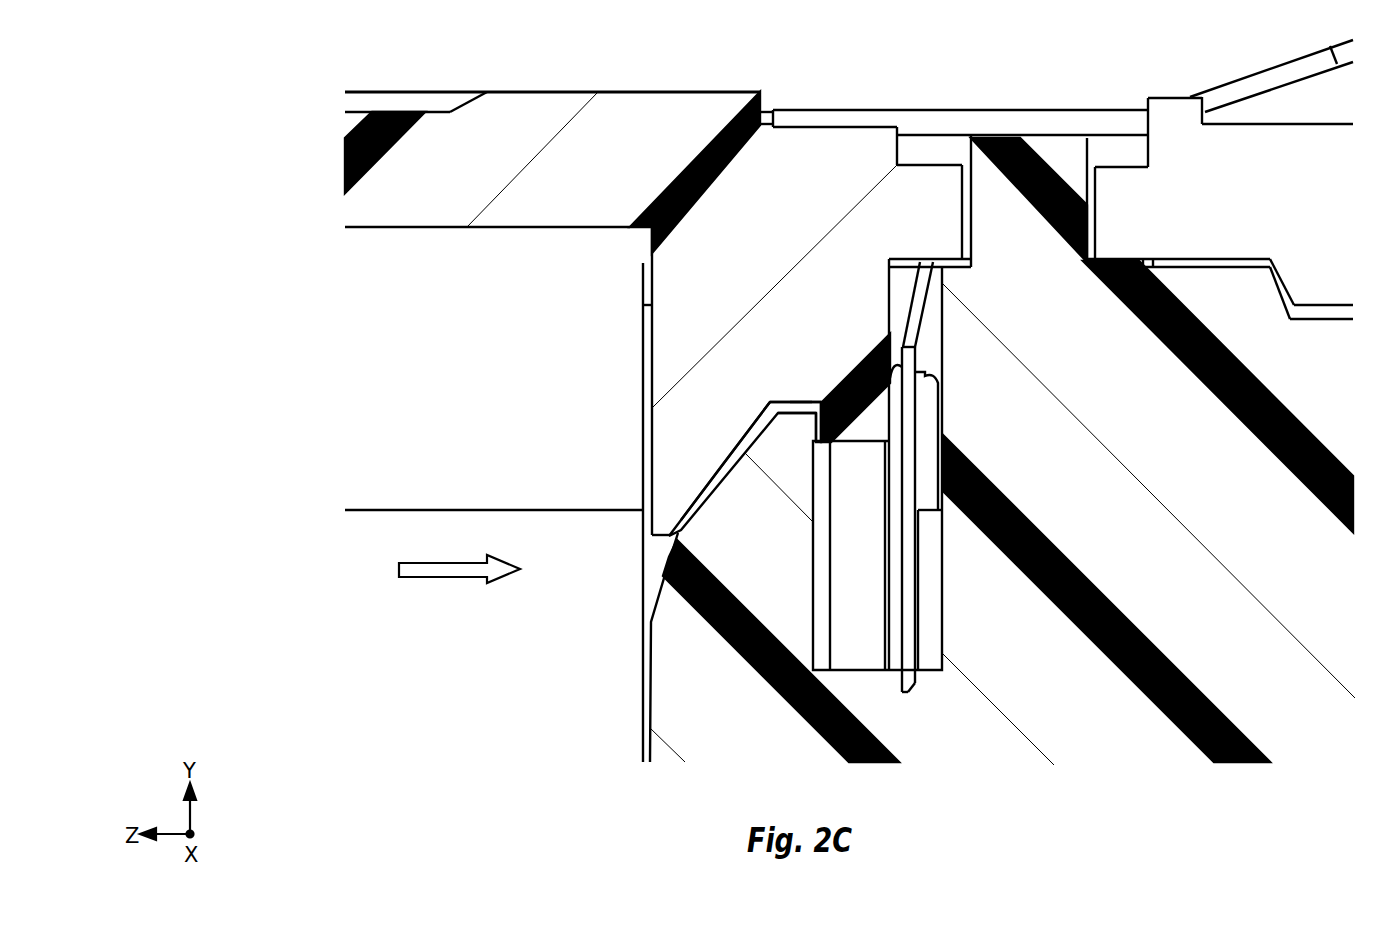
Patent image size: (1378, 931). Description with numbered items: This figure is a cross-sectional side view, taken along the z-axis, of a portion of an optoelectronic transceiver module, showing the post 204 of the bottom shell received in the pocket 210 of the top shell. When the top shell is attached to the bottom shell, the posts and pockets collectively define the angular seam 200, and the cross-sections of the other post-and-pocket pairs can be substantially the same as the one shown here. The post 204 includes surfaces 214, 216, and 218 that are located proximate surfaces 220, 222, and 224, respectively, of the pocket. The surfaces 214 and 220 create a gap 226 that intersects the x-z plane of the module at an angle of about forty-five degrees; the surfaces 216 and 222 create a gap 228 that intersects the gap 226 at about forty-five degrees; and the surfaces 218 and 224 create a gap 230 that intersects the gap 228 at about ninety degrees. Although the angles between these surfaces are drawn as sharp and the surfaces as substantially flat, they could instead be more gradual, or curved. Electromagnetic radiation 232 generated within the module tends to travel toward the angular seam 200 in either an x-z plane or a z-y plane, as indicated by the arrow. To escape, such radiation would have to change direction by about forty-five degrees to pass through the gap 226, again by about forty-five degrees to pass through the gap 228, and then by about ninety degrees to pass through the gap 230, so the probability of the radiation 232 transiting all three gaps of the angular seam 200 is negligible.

The angular seam 200 is at (860, 530).
The post 204 is at (751, 701).
The pocket 210 is at (782, 240).
The surface 214 is at (710, 512).
The surface 216 is at (795, 414).
The surface 218 is at (817, 436).
The surface 220 is at (688, 512).
The surface 222 is at (789, 402).
The surface 224 is at (820, 416).
The gap 226 is at (716, 478).
The gap 228 is at (800, 398).
The gap 230 is at (821, 450).
The electromagnetic radiation 232 is at (440, 568).